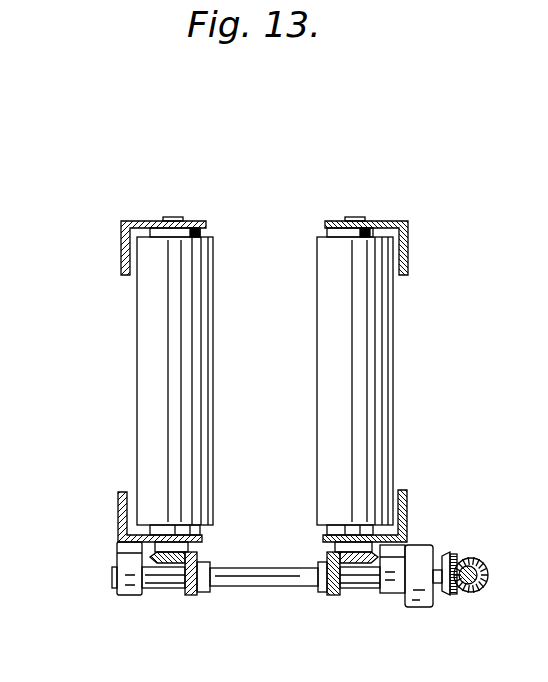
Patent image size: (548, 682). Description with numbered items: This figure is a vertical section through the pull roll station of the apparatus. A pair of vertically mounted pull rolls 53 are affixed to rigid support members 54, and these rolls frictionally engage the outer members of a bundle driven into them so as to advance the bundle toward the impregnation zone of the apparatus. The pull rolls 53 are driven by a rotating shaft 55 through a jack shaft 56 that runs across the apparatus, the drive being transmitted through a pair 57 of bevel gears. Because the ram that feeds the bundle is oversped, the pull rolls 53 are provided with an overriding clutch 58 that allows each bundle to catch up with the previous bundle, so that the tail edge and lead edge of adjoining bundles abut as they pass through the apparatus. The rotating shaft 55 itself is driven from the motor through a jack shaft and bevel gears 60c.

The pull rolls 53 is at (155, 330).
The rigid support members 54 is at (121, 232).
The rotating shaft 55 is at (473, 565).
The jack shaft 56 is at (280, 548).
The pair of bevel gears 57 is at (190, 598).
The overriding clutch 58 is at (422, 600).
The bevel gears 60c is at (455, 551).